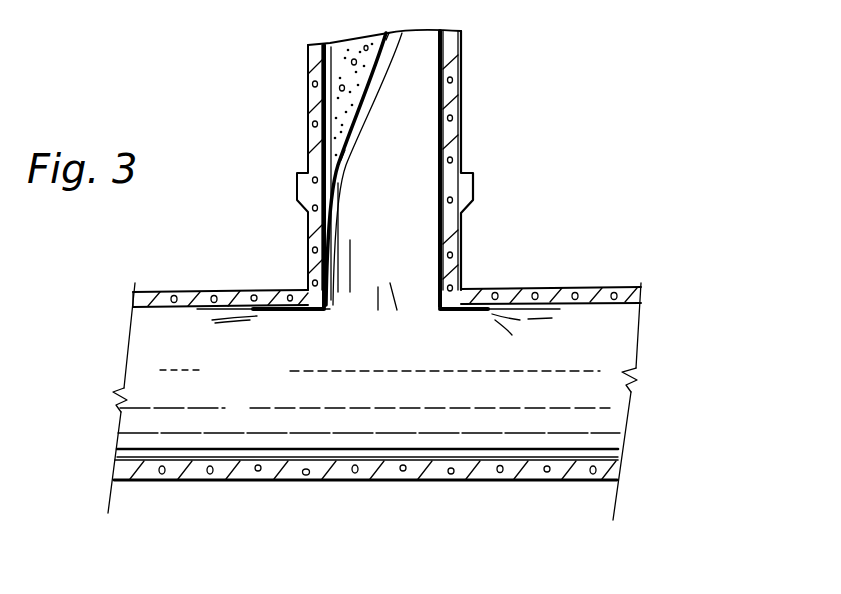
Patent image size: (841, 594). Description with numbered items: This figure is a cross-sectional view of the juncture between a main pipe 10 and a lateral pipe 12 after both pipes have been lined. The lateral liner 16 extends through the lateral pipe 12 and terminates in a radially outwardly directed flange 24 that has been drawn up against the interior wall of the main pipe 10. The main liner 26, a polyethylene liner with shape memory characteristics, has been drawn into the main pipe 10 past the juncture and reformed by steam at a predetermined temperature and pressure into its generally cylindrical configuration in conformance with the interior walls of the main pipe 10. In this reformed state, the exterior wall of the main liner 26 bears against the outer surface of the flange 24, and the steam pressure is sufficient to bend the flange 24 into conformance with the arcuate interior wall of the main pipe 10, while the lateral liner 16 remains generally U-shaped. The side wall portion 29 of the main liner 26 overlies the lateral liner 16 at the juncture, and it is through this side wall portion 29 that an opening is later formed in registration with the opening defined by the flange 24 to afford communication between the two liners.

The main pipe 10 is at (207, 289).
The lateral pipe 12 is at (447, 237).
The lateral liner 16 is at (360, 108).
The flange 24 is at (294, 312).
The main liner 26 is at (573, 362).
The side wall portion 29 is at (375, 246).